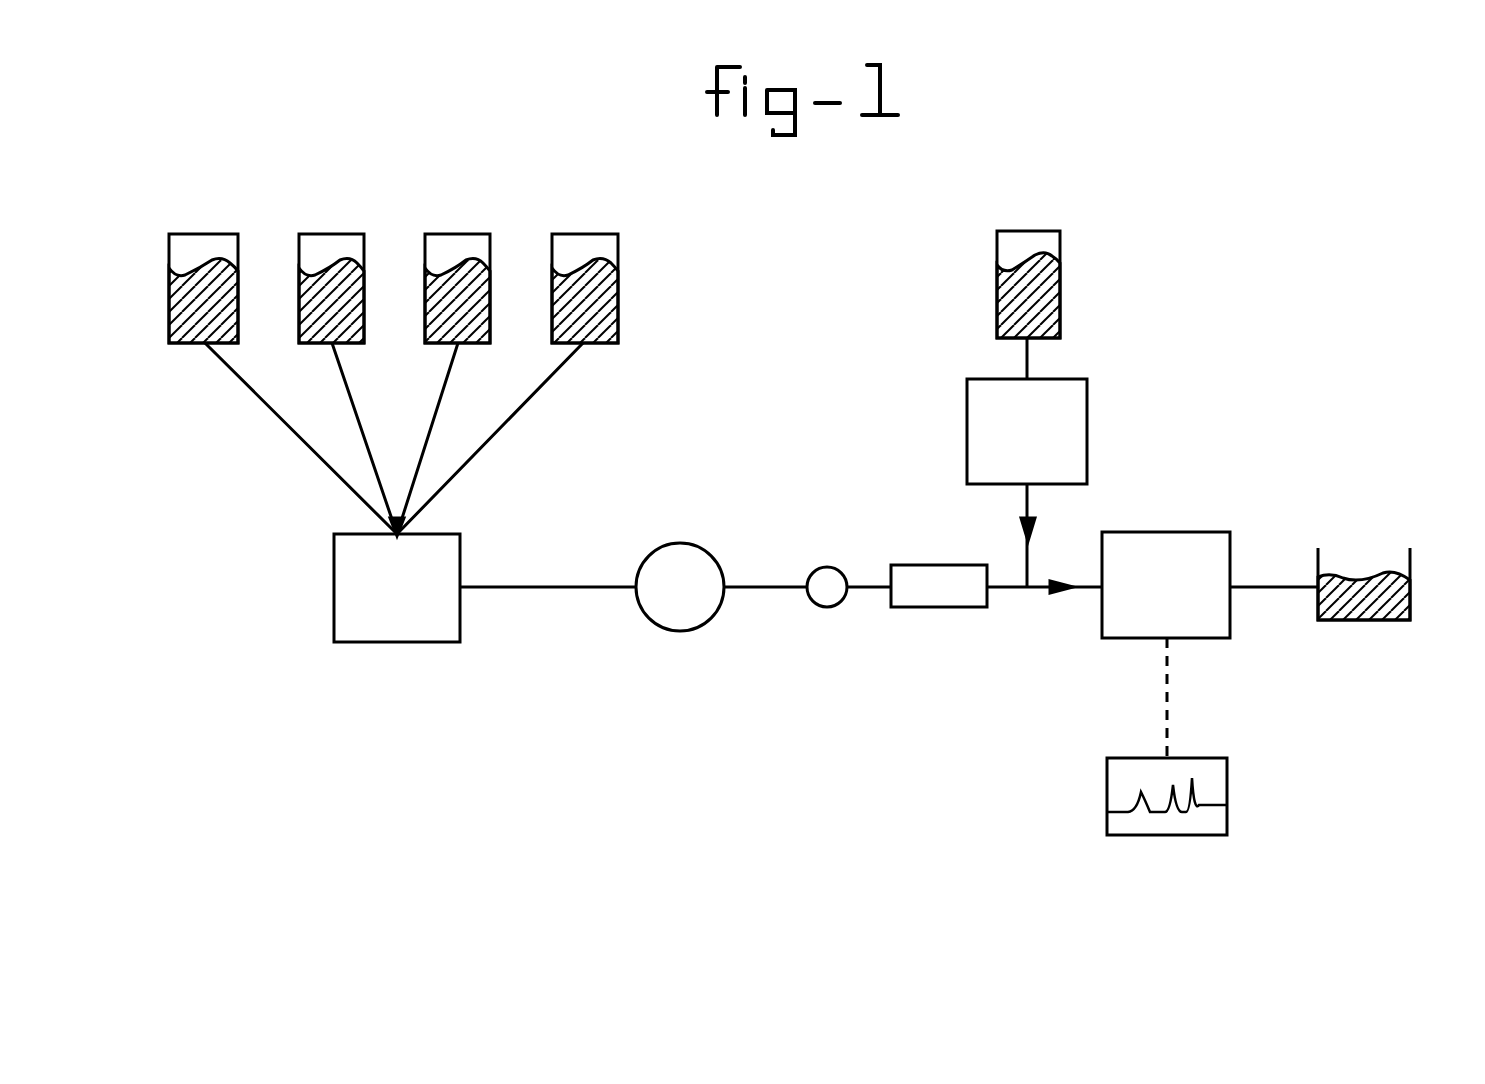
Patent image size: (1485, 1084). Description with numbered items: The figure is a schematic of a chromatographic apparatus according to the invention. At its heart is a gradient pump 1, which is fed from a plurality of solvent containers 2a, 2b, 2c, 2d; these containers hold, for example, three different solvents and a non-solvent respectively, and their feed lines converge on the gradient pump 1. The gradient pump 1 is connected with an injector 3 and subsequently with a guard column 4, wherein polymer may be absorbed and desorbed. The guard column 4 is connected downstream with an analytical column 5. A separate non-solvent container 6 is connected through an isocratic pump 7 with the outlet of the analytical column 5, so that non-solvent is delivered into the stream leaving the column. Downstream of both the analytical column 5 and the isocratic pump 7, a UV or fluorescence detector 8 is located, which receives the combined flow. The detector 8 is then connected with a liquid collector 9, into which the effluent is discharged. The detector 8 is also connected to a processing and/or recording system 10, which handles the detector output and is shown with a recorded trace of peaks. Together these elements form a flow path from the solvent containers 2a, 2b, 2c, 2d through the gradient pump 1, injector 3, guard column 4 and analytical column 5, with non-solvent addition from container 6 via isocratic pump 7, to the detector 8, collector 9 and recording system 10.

The gradient pump 1 is at (350, 560).
The solvent container 2a is at (204, 242).
The solvent container 2b is at (332, 242).
The solvent container 2c is at (459, 242).
The solvent container 2d is at (586, 242).
The injector 3 is at (681, 557).
The guard column 4 is at (828, 573).
The analytical column 5 is at (918, 575).
The non-solvent container 6 is at (1052, 244).
The isocratic pump 7 is at (1073, 403).
The UV or fluorescence detector 8 is at (1183, 551).
The liquid collector 9 is at (1412, 562).
The processing and/or recording system 10 is at (1227, 783).